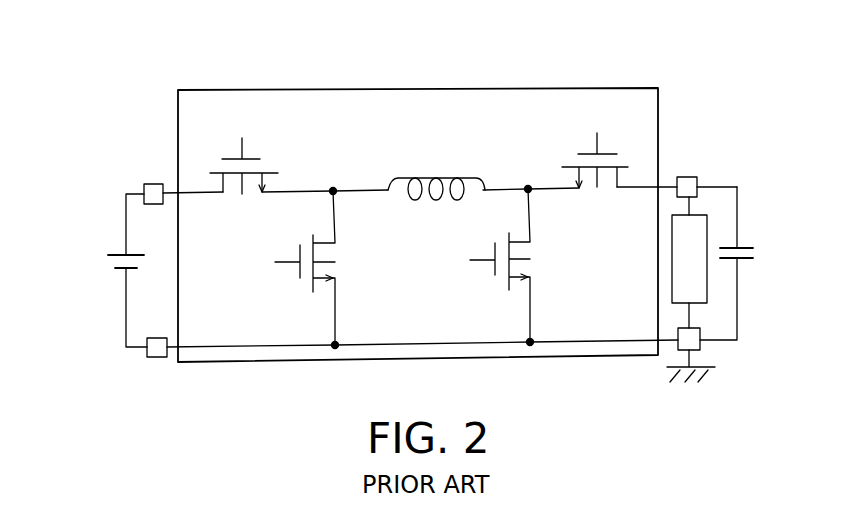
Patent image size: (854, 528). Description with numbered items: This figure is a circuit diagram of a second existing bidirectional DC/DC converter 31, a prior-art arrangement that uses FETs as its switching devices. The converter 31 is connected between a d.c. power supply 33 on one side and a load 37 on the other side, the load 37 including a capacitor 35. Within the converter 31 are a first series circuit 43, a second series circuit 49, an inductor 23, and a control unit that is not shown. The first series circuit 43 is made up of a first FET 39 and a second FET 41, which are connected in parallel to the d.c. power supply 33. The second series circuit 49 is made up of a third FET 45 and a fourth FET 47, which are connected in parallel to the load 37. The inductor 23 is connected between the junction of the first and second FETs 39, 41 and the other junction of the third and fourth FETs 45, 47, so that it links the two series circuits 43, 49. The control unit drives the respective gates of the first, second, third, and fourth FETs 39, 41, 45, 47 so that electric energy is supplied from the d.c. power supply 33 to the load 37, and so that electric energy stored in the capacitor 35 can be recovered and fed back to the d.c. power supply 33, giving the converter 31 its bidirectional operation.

The second existing bidirectional DC/DC converter 31 is at (428, 63).
The d.c. power supply 33 is at (118, 243).
The capacitor 35 is at (743, 241).
The load 37 is at (695, 215).
The first FET 39 is at (280, 170).
The second FET 41 is at (303, 285).
The first series circuit 43 is at (306, 177).
The third FET 45 is at (502, 280).
The fourth FET 47 is at (537, 156).
The second series circuit 49 is at (588, 192).
The inductor 23 is at (435, 177).